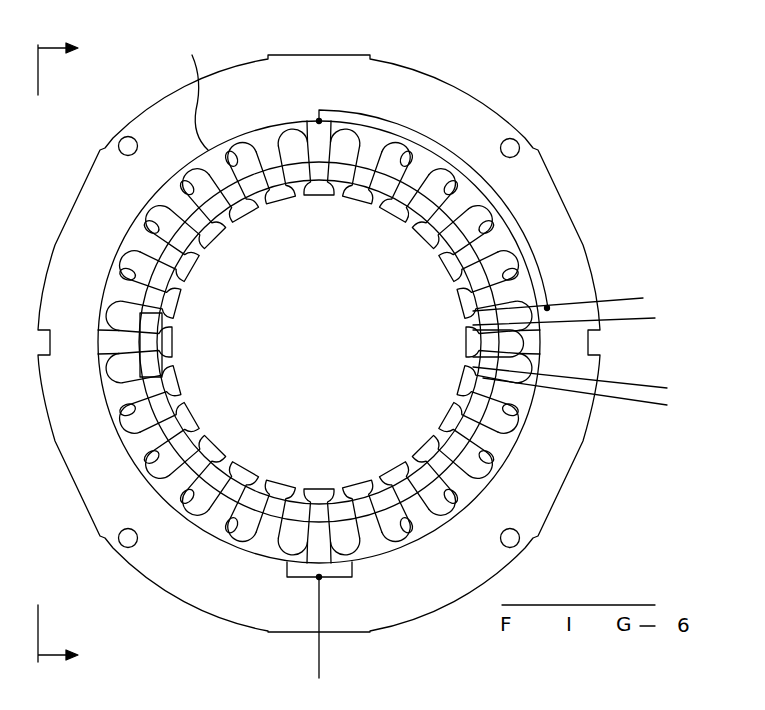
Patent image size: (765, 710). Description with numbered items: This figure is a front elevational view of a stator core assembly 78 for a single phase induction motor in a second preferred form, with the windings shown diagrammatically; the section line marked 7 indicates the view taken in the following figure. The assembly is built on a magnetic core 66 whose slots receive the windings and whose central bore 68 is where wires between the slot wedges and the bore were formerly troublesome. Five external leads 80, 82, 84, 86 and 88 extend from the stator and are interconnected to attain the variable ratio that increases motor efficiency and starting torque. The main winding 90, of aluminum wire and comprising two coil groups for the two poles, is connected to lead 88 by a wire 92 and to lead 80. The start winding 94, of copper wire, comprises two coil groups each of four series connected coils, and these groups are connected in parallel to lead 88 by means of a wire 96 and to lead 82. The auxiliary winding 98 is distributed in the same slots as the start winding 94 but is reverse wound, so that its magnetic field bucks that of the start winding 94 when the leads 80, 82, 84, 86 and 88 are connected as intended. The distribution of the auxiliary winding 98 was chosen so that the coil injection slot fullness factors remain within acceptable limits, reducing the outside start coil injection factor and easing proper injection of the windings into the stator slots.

The section line 7- 7 is at (69, 353).
The magnetic core 66 is at (466, 112).
The bore 68 is at (332, 303).
The stator core assembly 78 is at (440, 74).
The external lead 80 is at (322, 664).
The external lead 82 is at (627, 400).
The external lead 84 is at (650, 385).
The external lead 86 is at (637, 317).
The external lead 88 is at (623, 298).
The main winding 90 is at (192, 90).
The wire 92 is at (465, 185).
The start winding 94 is at (226, 462).
The wire 96 is at (547, 308).
The auxiliary winding 98 is at (408, 458).